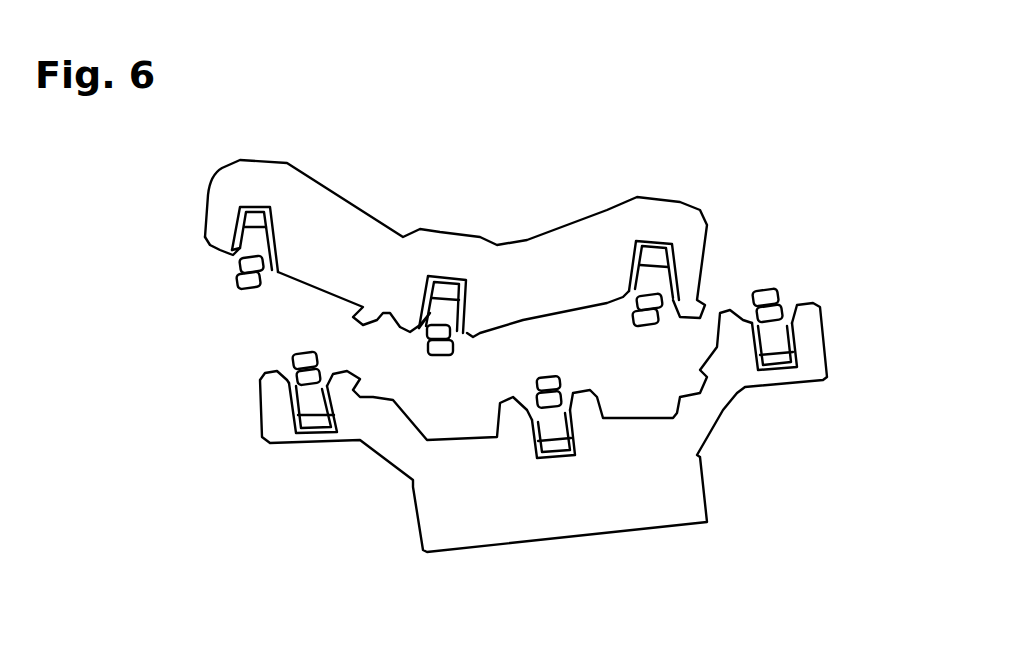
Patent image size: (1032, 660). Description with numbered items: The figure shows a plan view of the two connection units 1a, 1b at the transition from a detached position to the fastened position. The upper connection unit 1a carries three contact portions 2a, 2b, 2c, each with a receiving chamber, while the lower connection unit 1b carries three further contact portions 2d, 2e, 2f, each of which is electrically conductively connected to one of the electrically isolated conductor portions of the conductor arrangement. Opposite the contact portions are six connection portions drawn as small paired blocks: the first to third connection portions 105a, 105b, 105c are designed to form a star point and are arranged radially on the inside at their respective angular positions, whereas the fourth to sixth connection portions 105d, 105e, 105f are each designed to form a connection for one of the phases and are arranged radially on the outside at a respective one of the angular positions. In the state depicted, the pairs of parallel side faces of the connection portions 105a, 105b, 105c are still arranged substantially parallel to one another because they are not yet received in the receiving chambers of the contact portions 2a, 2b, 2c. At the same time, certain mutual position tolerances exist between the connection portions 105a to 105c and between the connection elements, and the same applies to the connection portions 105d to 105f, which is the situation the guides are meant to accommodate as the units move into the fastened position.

The connection unit 1a is at (357, 237).
The connection unit 1b is at (657, 505).
The contact portion 2a is at (284, 229).
The contact portion 2b is at (697, 270).
The contact portion 2c is at (470, 300).
The contact portion 2d is at (290, 410).
The contact portion 2e is at (800, 337).
The contact portion 2f is at (515, 440).
The first connection portion 105a is at (245, 294).
The second connection portion 105b is at (645, 335).
The third connection portion 105c is at (438, 362).
The fourth connection portion 105d is at (303, 347).
The fifth connection portion 105e is at (771, 280).
The sixth connection portion 105f is at (550, 370).